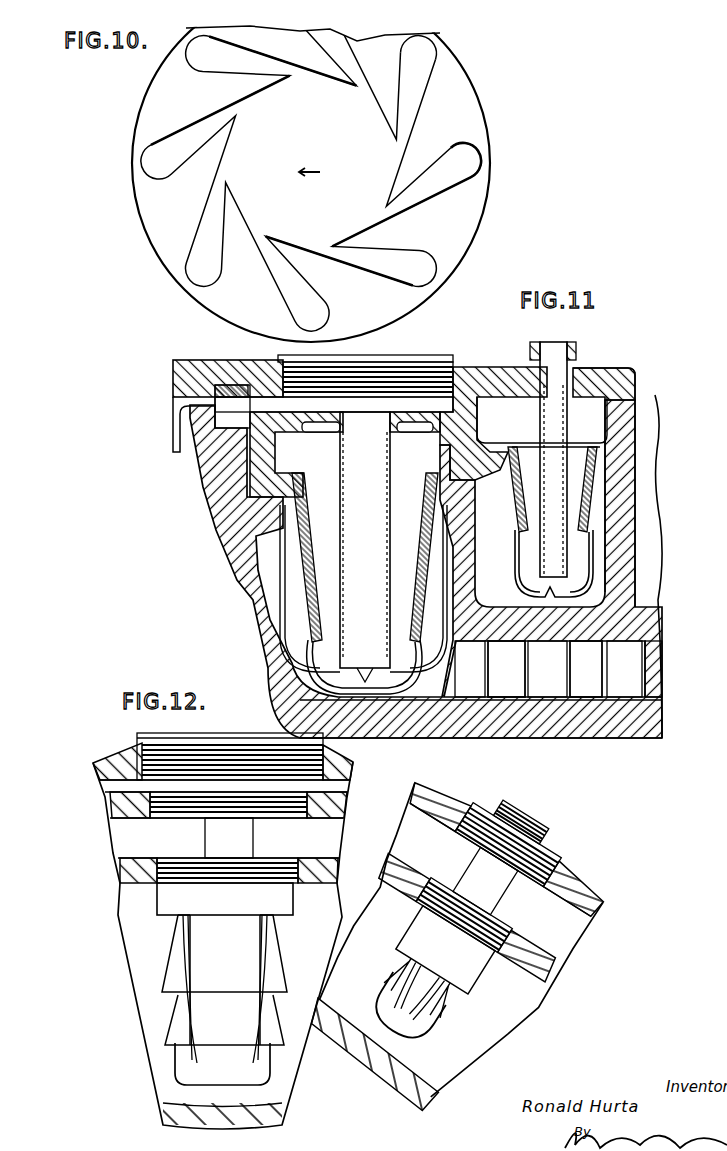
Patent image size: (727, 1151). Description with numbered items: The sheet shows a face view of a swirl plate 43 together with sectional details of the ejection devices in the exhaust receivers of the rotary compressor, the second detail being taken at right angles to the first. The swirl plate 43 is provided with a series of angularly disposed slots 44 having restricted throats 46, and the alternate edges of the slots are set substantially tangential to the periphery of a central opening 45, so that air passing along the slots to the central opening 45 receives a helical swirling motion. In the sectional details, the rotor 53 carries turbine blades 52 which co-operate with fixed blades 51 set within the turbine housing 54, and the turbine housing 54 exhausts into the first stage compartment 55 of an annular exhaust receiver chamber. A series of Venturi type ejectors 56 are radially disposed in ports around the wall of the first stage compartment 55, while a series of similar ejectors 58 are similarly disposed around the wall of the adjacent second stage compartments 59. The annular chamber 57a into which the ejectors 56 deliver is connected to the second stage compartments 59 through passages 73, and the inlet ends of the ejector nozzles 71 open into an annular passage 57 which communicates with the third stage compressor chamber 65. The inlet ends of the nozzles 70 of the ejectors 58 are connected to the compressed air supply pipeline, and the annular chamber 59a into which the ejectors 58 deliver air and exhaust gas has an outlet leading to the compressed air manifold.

In FIG. 10, the swirl plate 43 is at (457, 107).
In FIG. 10, the angularly disposed slots 44 is at (427, 70).
In FIG. 10, the central opening 45 is at (308, 164).
In FIG. 10, the restricted throats 46 is at (235, 110).
In FIG. 11, the third stage compressor chamber 65 is at (260, 407).
In FIG. 11, the annular passage 57 is at (403, 402).
In FIG. 11, the annular chamber 57a is at (287, 458).
In FIG. 12, the annular chamber 57a is at (132, 837).
In FIG. 11, the ejector nozzles 71 is at (353, 515).
In FIG. 11, the first stage compartment 55 is at (285, 588).
In FIG. 12, the first stage compartment 55 is at (170, 1073).
In FIG. 11, the Venturi type ejectors 56 is at (332, 652).
In FIG. 12, the Venturi type ejectors 56 is at (228, 828).
In FIG. 11, the passages 73 is at (473, 480).
In FIG. 11, the nozzles 70 is at (568, 356).
In FIG. 12, the nozzles 70 is at (540, 815).
In FIG. 11, the second stage compartments 59 is at (600, 548).
In FIG. 12, the second stage compartments 59 is at (498, 980).
In FIG. 11, the annular chamber 59a is at (600, 420).
In FIG. 12, the annular chamber 59a is at (550, 918).
In FIG. 11, the ejectors 58 is at (647, 410).
In FIG. 12, the ejectors 58 is at (470, 1040).
In FIG. 11, the fixed blades 51 is at (503, 680).
In FIG. 11, the turbine blades 52 is at (458, 683).
In FIG. 11, the rotor 53 is at (557, 720).
In FIG. 11, the turbine housing 54 is at (662, 698).